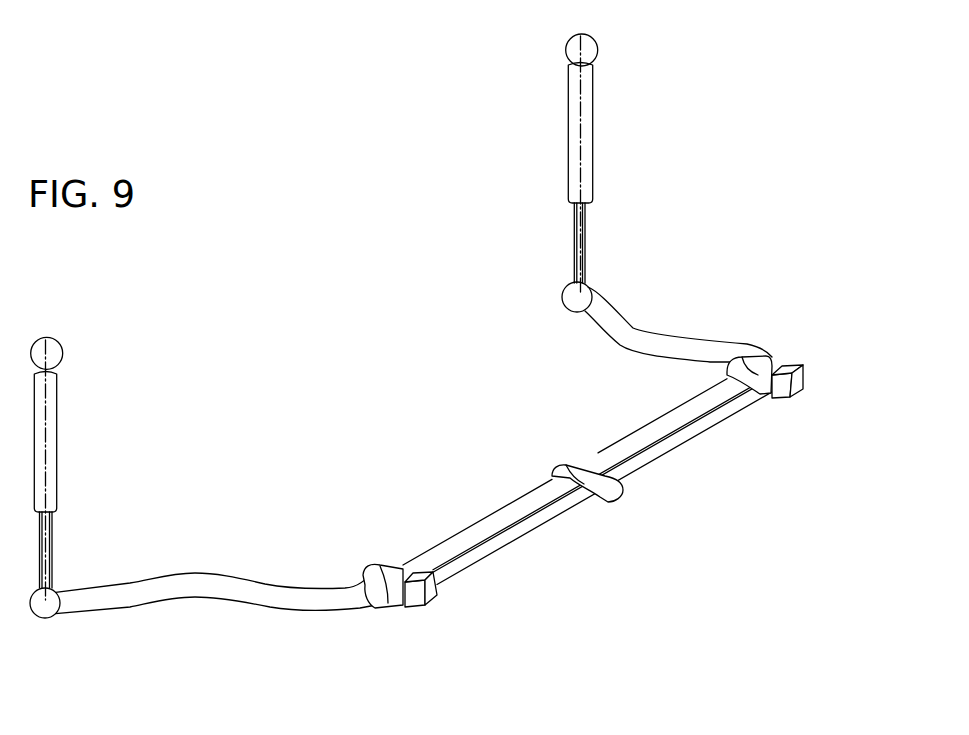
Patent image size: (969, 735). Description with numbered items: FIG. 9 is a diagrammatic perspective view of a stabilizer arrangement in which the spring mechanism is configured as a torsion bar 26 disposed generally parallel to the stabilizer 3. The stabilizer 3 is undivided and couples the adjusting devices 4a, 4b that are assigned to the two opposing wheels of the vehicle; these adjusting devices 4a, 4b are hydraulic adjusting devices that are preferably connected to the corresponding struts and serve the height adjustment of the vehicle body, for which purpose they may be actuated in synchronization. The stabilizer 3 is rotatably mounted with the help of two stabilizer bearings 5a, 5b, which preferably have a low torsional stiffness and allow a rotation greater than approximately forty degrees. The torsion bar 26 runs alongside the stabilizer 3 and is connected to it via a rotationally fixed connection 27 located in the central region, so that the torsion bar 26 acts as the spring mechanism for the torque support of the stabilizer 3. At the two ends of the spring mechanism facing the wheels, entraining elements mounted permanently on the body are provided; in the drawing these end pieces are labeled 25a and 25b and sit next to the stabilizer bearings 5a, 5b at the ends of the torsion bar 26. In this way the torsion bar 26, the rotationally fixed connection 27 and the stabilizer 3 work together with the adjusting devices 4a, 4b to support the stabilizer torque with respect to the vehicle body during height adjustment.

The stabilizer 3 is at (526, 502).
The torsion bar 26 is at (528, 532).
The rotationally fixed connection 27 is at (615, 483).
The adjusting device 4a is at (52, 475).
The adjusting device 4b is at (588, 102).
The stabilizer bearing 5a is at (389, 597).
The stabilizer bearing 5b is at (763, 362).
The left end block 25a is at (427, 593).
The right end block 25b is at (795, 385).